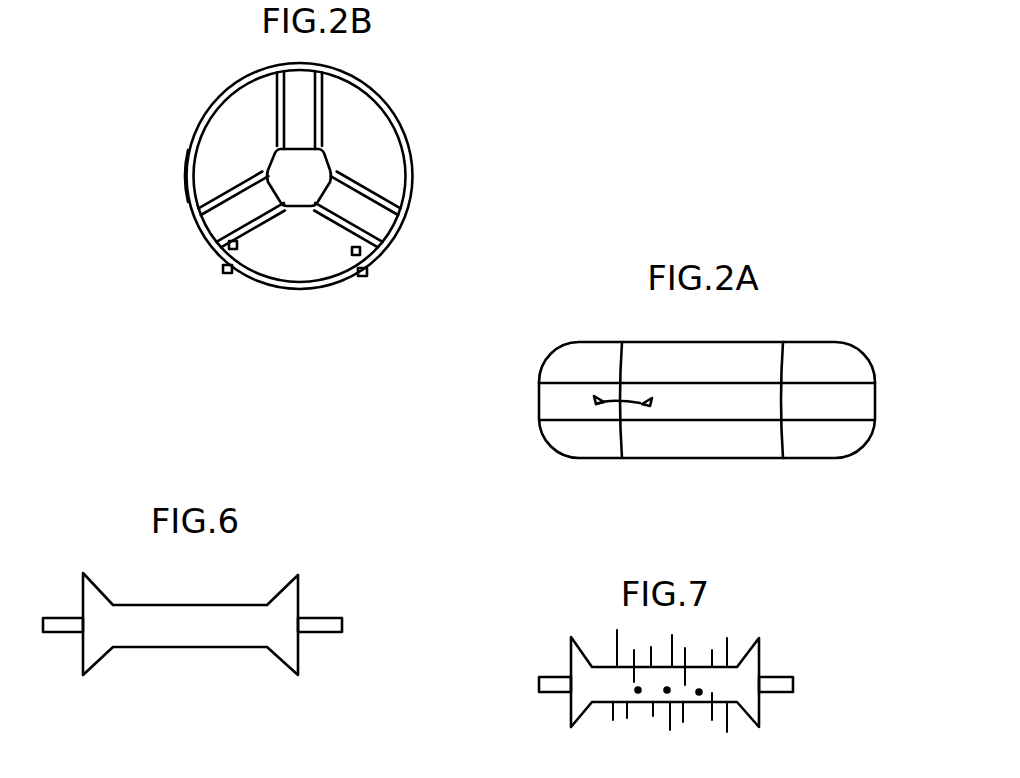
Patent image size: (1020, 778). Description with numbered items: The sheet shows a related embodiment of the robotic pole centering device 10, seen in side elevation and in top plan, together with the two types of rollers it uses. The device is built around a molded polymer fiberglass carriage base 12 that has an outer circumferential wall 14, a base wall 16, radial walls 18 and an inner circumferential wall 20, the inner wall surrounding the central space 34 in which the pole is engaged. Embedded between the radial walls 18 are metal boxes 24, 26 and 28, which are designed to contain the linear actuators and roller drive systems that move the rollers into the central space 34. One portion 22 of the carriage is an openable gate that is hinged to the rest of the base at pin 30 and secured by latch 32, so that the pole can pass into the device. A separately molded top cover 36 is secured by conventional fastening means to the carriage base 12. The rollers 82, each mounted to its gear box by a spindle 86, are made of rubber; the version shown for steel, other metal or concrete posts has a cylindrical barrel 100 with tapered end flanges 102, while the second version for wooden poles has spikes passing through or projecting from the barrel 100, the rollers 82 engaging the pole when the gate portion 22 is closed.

In FIG. 2B, the robotic pole centering device 10 is at (403, 138).
In FIG. 2A, the robotic pole centering device 10 is at (518, 423).
In FIG. 2B, the carriage base 12 is at (404, 190).
In FIG. 2A, the carriage base 12 is at (520, 376).
In FIG. 2B, the outer circumferential wall 14 is at (187, 172).
In FIG. 2A, the outer circumferential wall 14 is at (594, 400).
In FIG. 2B, the base wall 16 is at (380, 158).
In FIG. 2B, the radial walls 18 is at (276, 104).
In FIG. 2B, the inner circumferential wall 20 is at (263, 154).
In FIG. 2B, the openable gate portion 22 is at (323, 258).
In FIG. 2B, the metal box 24 is at (222, 232).
In FIG. 2B, the metal box 26 is at (304, 94).
In FIG. 2B, the metal box 28 is at (370, 226).
In FIG. 2B, the pin 30 is at (365, 276).
In FIG. 2B, the latch 32 is at (230, 273).
In FIG. 2A, the latch 32 is at (642, 404).
In FIG. 2B, the central space 34 is at (316, 172).
In FIG. 2A, the top cover 36 is at (825, 342).
In FIG. 6, the roller 82 is at (212, 599).
In FIG. 7, the roller 82 is at (697, 645).
In FIG. 6, the spindle 86 is at (60, 618).
In FIG. 7, the spindle 86 is at (550, 677).
In FIG. 6, the cylindrical barrel 100 is at (160, 615).
In FIG. 6, the tapered end flanges 102 is at (96, 601).
In FIG. 7, the tapered end flanges 102 is at (580, 650).